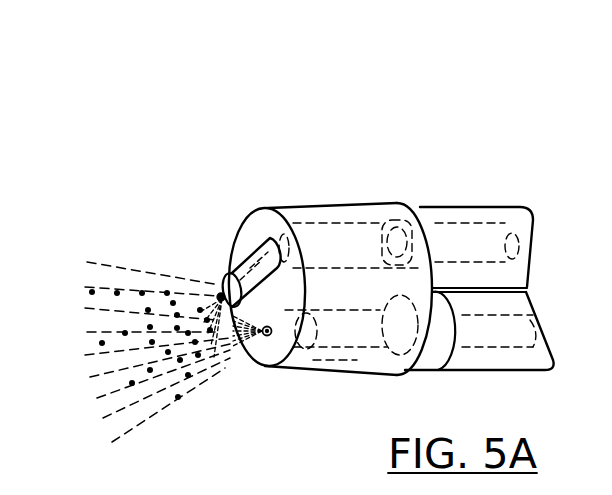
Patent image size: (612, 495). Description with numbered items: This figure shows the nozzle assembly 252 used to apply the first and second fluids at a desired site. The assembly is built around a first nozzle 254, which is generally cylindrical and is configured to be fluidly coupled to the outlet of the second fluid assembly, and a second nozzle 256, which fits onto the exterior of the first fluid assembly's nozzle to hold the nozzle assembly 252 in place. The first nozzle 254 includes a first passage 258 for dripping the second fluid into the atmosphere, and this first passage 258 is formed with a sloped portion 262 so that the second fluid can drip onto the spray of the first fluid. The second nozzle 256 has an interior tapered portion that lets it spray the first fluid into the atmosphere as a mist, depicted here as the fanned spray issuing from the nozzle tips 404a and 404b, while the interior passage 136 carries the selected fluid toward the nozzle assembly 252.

The nozzle assembly 252 is at (235, 167).
The first nozzle 254 is at (348, 205).
The second nozzle 256 is at (330, 373).
The first passage 258 is at (232, 267).
The sloped portion 262 is at (227, 272).
The first spray orifice 404a is at (222, 300).
The second spray orifice 404b is at (266, 337).
The interior passage 136 is at (413, 370).